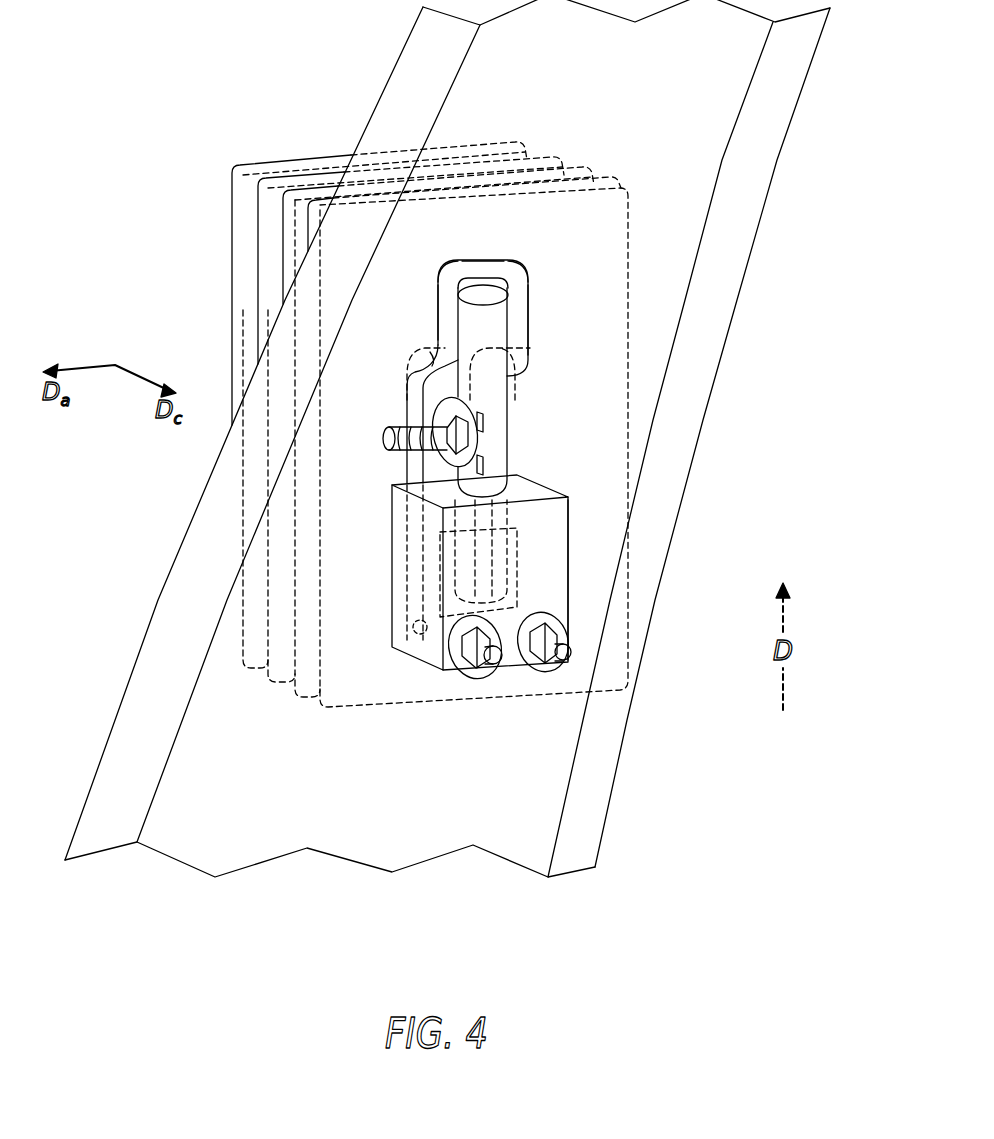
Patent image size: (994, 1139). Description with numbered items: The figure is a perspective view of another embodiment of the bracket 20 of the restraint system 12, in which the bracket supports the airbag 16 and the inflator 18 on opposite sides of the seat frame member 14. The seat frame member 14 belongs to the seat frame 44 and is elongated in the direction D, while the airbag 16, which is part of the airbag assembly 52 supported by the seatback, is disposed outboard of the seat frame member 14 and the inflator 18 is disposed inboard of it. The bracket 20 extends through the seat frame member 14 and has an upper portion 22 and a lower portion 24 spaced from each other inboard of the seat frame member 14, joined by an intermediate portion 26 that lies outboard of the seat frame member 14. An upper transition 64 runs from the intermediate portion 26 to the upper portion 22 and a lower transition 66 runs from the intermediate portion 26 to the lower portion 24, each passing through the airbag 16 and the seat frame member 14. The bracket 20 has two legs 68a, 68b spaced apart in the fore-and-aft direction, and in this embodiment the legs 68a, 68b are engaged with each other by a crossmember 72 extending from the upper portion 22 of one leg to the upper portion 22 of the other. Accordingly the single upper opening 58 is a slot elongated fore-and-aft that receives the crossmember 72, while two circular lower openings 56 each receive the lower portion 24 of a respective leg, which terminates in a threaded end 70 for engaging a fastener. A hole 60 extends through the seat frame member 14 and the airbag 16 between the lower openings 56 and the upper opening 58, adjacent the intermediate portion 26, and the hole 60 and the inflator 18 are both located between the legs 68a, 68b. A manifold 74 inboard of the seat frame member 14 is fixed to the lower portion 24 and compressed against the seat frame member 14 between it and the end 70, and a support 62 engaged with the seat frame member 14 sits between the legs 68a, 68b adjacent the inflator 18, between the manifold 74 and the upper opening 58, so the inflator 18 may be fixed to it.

The restraint system 12 is at (290, 88).
The seat frame member 14 is at (113, 707).
The airbag 16 is at (230, 193).
The inflator 18 is at (507, 445).
The bracket 20 is at (495, 252).
The upper portion 22 is at (438, 298).
The lower portion 24 is at (495, 618).
The intermediate portion 26 is at (405, 418).
The seat frame 44 is at (133, 648).
The airbag assembly 52 is at (184, 241).
The lower opening 56 is at (513, 617).
The upper opening 58 is at (433, 348).
The hole 60 is at (440, 583).
The support 62 is at (483, 420).
The upper transition 64 is at (429, 352).
The lower transition 66 is at (413, 625).
The leg 68a is at (437, 279).
The leg 68b is at (527, 268).
The end 70 is at (567, 662).
The crossmember 72 is at (473, 261).
The manifold 74 is at (570, 513).